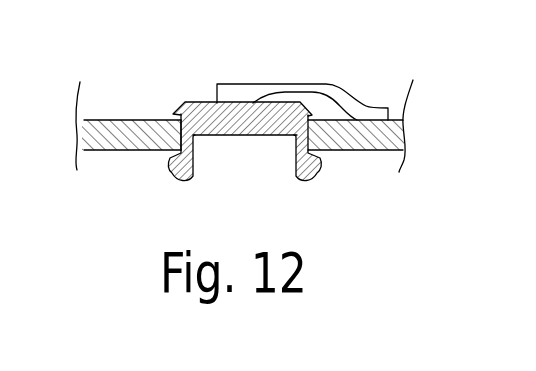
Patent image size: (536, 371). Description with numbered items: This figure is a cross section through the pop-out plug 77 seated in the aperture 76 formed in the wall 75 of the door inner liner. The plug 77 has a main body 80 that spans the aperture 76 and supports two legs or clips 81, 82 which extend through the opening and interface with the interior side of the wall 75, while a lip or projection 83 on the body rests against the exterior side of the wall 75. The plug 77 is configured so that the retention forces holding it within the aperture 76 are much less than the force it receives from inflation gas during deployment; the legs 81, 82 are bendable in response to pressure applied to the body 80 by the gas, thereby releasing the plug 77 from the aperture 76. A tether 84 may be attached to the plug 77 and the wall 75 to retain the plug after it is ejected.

The wall 75 is at (107, 120).
The aperture 76 is at (170, 138).
The plug 77 is at (258, 126).
The main body 80 is at (262, 120).
The leg 81 is at (320, 158).
The leg 82 is at (174, 177).
The lip 83 is at (177, 116).
The tether 84 is at (312, 84).